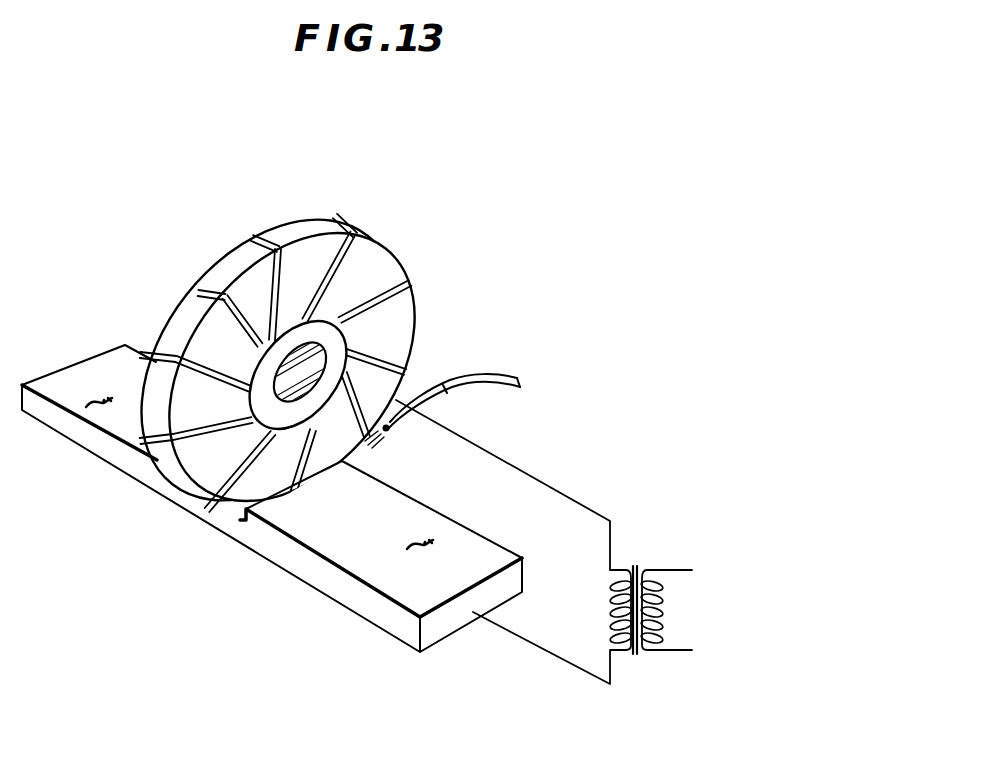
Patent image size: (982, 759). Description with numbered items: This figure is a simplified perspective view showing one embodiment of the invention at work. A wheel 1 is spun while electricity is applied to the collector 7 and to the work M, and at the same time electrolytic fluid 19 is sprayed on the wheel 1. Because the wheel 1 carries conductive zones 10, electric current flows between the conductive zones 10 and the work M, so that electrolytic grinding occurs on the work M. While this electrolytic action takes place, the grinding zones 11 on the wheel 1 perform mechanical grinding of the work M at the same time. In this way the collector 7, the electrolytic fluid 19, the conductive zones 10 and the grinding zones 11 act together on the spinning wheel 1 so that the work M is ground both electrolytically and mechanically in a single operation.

The wheel 1 is at (331, 215).
The collector 7 is at (335, 355).
The conductive zones 10 is at (212, 292).
The grinding zones 11 is at (180, 330).
The electrolytic fluid 19 is at (389, 433).
The work M is at (298, 558).